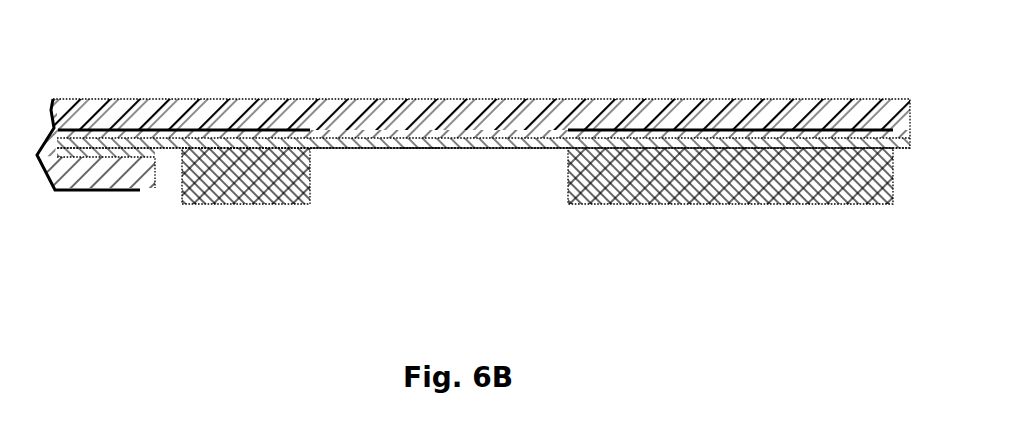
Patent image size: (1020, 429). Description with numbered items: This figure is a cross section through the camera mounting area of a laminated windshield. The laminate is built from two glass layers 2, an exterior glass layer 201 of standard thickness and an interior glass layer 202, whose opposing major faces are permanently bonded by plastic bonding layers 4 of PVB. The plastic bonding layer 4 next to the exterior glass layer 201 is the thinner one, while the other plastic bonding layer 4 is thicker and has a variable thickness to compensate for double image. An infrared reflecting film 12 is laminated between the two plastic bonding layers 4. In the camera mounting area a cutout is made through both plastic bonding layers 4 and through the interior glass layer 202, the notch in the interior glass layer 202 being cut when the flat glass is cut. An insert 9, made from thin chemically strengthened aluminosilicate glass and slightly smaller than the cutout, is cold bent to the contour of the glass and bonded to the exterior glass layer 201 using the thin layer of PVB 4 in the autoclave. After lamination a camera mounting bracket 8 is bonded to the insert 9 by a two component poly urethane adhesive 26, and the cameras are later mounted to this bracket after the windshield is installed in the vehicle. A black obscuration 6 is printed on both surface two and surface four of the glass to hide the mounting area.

The glass layers 2 is at (128, 150).
The plastic bonding layer 4 is at (493, 121).
The black obscuration 6 is at (153, 120).
The camera mounting bracket 8 is at (267, 212).
The insert 9 is at (422, 160).
The infrared reflecting film 12 is at (82, 127).
The two component poly urethane adhesive 26 is at (322, 153).
The exterior glass layer 201 is at (715, 90).
The interior glass layer 202 is at (147, 200).